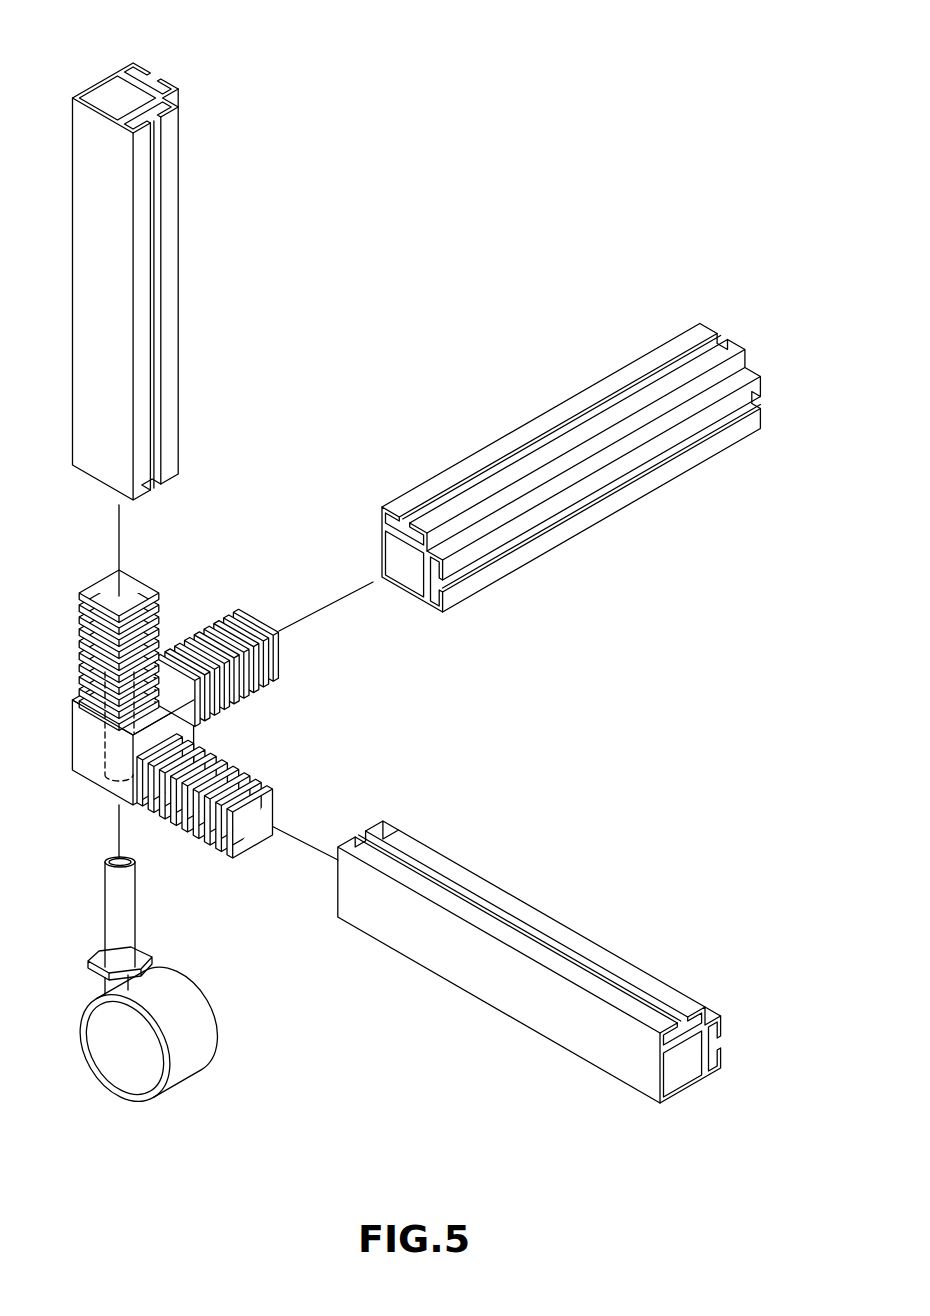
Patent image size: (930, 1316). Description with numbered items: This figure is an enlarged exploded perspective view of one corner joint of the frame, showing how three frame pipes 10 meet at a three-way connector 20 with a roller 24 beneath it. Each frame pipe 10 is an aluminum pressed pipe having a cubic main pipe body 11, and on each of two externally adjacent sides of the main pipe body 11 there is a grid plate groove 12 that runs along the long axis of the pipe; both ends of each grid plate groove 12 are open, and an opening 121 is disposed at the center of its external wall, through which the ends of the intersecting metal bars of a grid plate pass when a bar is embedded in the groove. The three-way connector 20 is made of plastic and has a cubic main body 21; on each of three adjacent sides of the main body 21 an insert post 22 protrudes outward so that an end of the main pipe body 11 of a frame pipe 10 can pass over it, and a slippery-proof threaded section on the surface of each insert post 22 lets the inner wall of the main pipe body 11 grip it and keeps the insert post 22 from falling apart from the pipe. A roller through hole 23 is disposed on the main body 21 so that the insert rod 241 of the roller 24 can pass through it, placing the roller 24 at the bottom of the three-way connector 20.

The frame pipe 10 is at (423, 567).
The main pipe body 11 is at (106, 87).
The grid plate groove 12 is at (145, 67).
The opening 121 is at (153, 76).
The three-way connector 20 is at (181, 681).
The main body 21 is at (72, 724).
The insert post 22 is at (137, 587).
The roller through hole 23 is at (100, 781).
The roller 24 is at (171, 987).
The insert rod 241 is at (128, 903).